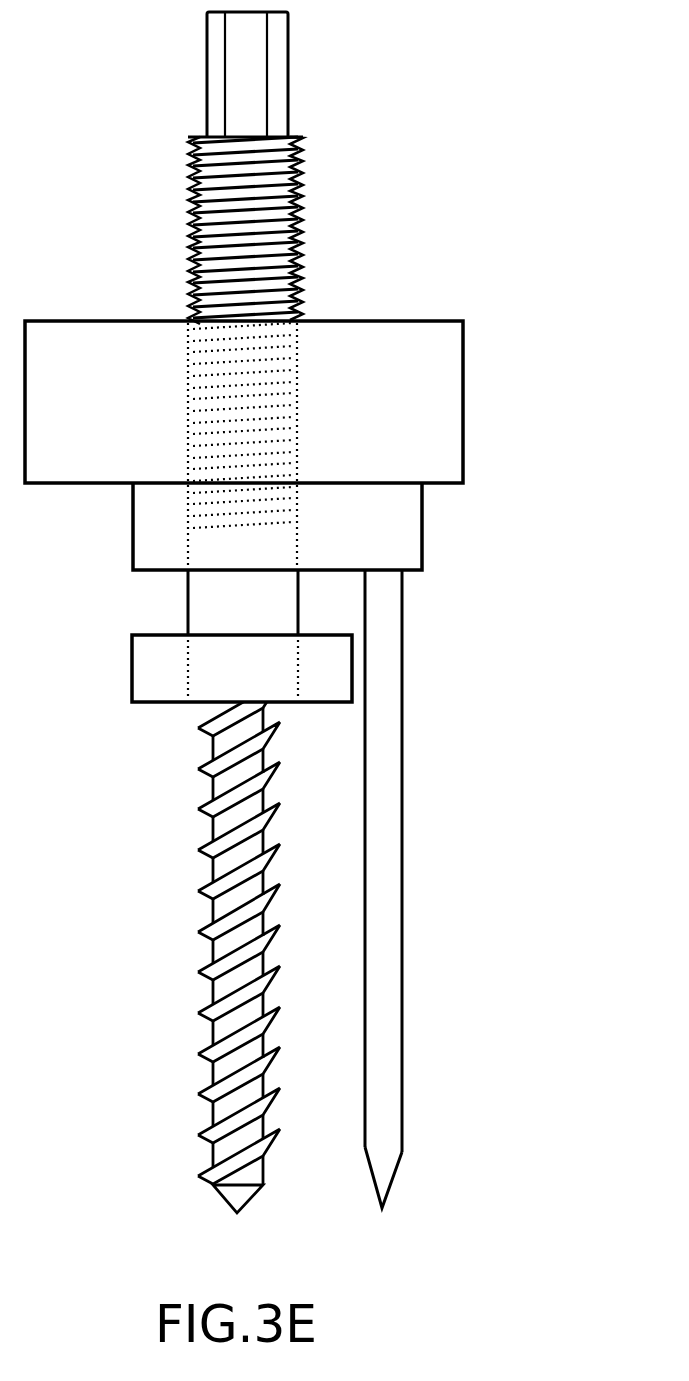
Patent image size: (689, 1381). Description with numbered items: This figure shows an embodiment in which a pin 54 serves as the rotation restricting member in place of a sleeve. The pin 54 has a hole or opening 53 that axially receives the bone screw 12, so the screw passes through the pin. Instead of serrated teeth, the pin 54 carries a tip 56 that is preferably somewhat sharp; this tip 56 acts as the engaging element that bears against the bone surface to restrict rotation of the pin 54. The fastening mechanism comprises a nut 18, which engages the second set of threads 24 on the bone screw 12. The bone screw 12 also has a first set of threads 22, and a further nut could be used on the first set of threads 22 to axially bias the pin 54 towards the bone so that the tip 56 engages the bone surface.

The bone screw 12 is at (212, 1206).
The nut 18 is at (494, 440).
The first set of threads 22 is at (193, 917).
The second set of threads 24 is at (324, 275).
The hole or opening 53 is at (169, 584).
The pin 54 is at (420, 984).
The tip 56 is at (401, 1202).